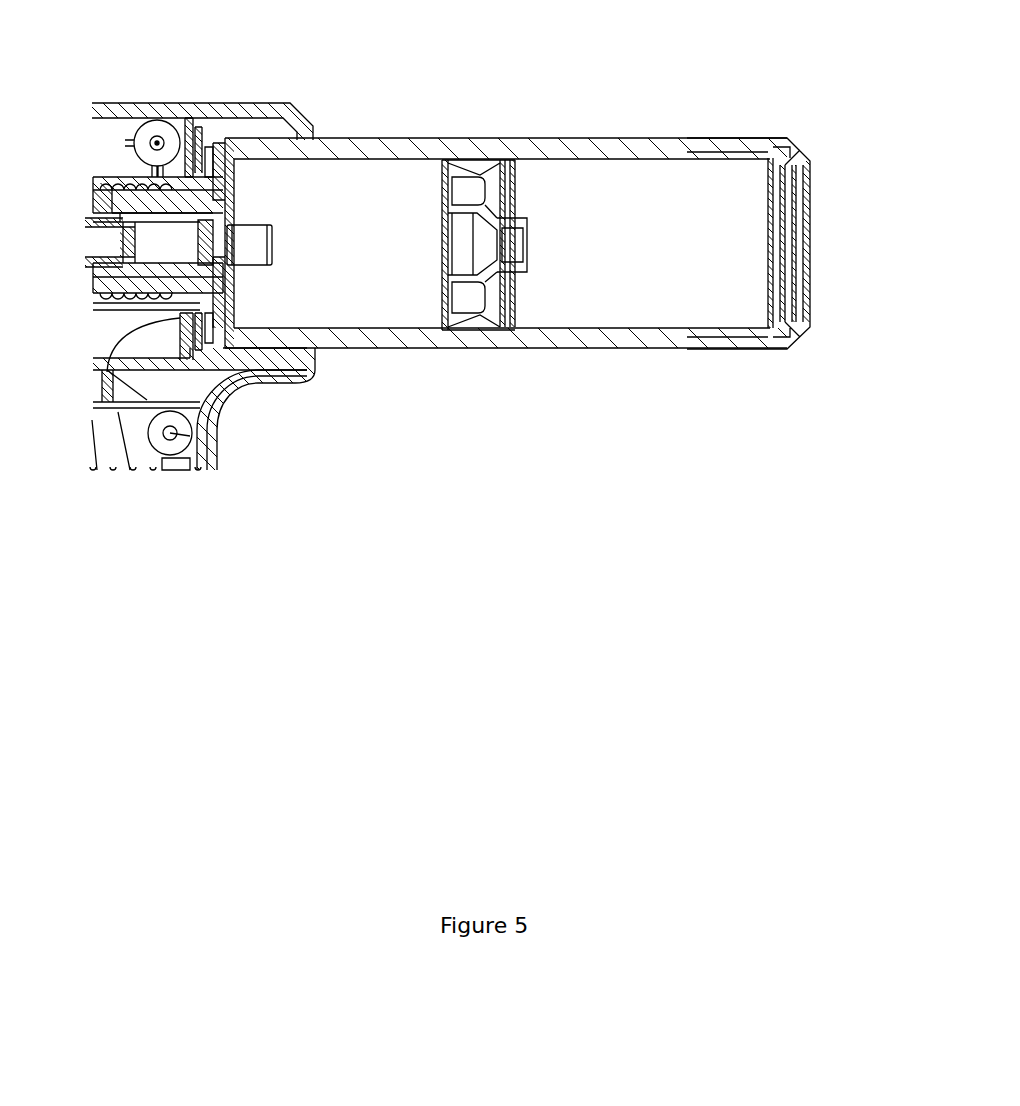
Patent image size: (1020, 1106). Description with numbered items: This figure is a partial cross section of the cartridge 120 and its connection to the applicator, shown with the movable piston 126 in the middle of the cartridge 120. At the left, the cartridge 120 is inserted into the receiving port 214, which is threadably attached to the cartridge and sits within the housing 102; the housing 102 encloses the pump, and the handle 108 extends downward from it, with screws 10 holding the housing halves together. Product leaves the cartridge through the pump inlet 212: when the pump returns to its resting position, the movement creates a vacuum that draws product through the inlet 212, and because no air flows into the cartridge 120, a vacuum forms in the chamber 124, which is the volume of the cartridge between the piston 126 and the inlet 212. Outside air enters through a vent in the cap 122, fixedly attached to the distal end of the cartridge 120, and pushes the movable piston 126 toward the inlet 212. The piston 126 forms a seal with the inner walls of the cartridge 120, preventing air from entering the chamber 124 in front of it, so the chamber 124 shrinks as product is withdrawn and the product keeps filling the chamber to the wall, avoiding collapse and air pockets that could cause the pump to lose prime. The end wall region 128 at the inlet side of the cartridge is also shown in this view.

The screws 10 is at (157, 143).
The housing 102 is at (240, 105).
The handle 108 is at (211, 419).
The cartridge 120 is at (420, 140).
The cap 122 is at (800, 197).
The chamber 124 is at (405, 253).
The movable piston 126 is at (511, 183).
The cylinder end wall 128 is at (222, 305).
The pump inlet 212 is at (260, 243).
The receiving port 214 is at (130, 186).